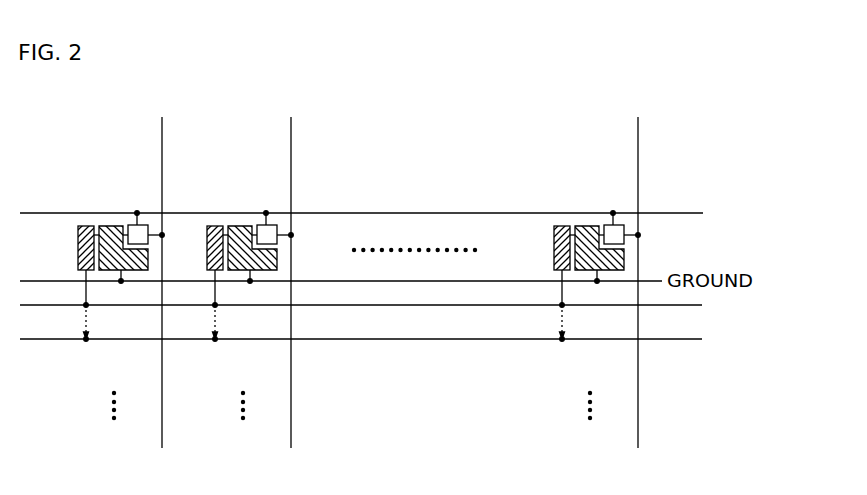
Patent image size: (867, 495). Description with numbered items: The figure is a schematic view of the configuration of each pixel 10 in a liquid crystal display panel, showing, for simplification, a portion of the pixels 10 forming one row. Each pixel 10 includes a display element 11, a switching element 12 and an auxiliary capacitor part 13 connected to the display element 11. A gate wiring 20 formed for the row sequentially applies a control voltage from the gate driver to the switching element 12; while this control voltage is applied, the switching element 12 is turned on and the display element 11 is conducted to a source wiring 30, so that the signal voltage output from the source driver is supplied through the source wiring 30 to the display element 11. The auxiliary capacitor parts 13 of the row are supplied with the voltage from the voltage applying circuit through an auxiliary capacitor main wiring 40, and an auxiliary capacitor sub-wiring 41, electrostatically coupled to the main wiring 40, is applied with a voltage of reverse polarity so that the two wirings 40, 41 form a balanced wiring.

The pixel 10 is at (114, 299).
The display element 11 is at (117, 226).
The switching element 12 is at (140, 225).
The auxiliary capacitor part 13 is at (85, 226).
The gate wiring 20 is at (665, 213).
The source wiring 30 is at (162, 129).
The auxiliary capacitor main wiring 40 is at (648, 306).
The auxiliary capacitor sub-wiring 41 is at (648, 340).